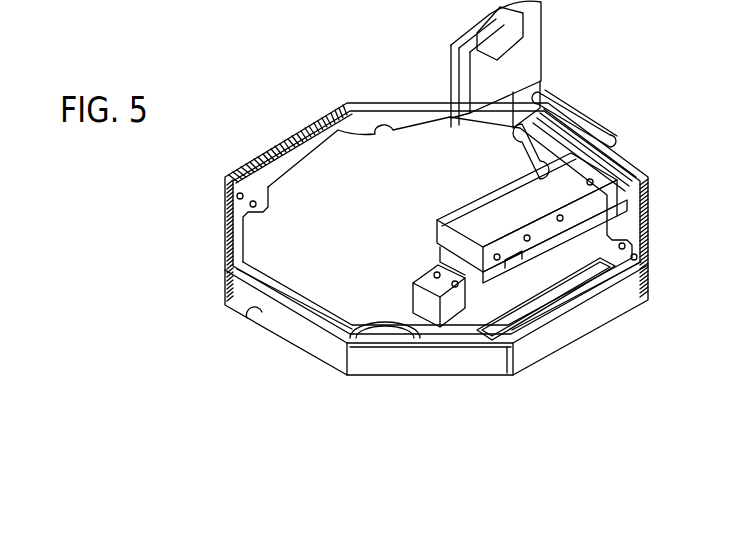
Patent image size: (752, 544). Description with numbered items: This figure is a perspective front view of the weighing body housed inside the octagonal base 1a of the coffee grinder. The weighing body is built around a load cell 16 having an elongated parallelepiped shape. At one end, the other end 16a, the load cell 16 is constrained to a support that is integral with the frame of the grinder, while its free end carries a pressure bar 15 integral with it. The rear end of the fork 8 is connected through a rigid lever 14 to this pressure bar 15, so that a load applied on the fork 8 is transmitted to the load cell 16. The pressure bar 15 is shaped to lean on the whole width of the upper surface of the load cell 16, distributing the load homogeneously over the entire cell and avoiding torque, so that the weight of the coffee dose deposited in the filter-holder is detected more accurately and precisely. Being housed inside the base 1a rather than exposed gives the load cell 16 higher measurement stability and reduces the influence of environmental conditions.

The octagonal base 1a is at (522, 358).
The rigid lever 14 is at (457, 123).
The fork 8 is at (490, 148).
The pressure bar 15 is at (477, 228).
The load cell 16 is at (558, 247).
The other end of the load cell 16a is at (433, 305).